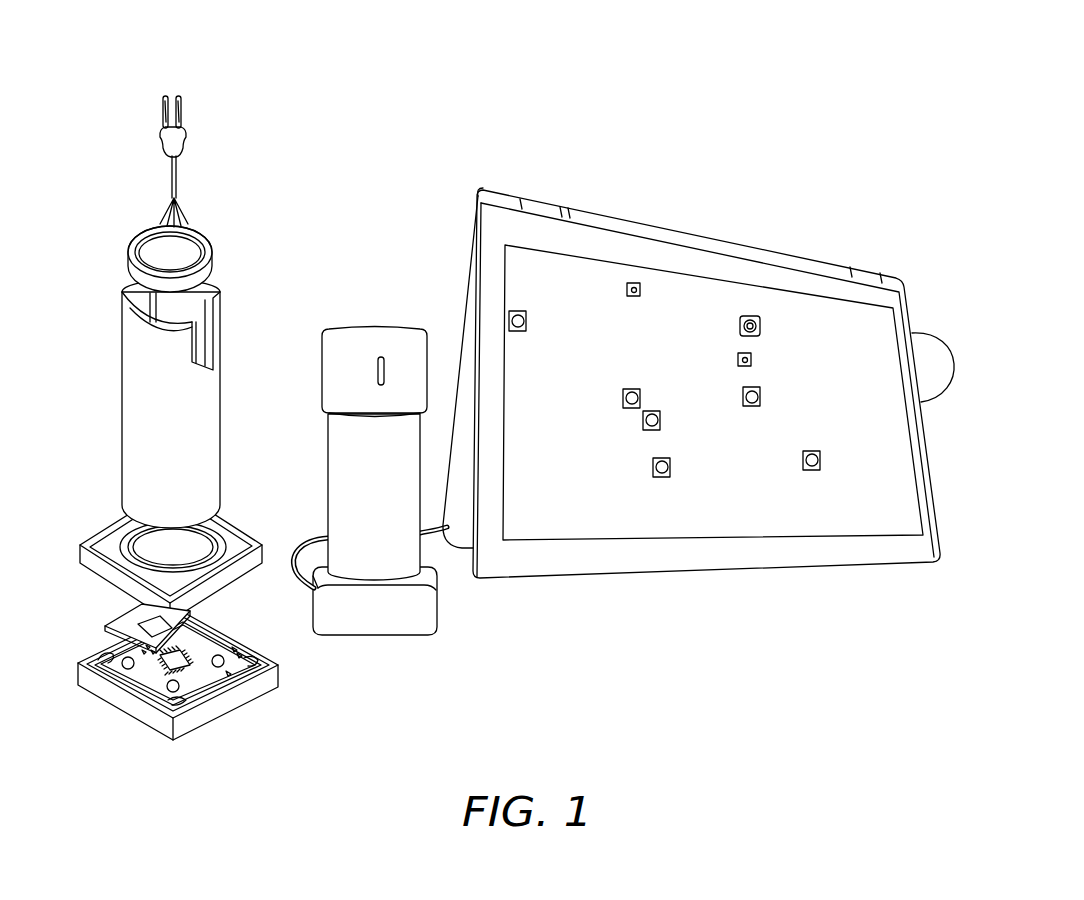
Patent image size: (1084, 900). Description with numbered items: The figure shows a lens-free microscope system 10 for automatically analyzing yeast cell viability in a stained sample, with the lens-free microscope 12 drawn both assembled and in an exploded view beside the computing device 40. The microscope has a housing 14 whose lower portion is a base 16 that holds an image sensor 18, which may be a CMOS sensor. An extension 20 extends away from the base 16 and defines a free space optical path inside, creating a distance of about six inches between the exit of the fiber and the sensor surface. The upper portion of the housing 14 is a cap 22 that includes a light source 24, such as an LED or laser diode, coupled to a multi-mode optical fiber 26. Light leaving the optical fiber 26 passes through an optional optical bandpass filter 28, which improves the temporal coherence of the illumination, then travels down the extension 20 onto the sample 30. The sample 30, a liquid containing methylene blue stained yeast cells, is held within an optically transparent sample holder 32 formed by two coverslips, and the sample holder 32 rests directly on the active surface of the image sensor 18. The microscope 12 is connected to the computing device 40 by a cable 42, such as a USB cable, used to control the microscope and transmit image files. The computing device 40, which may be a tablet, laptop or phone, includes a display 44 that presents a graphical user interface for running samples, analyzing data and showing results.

The lens-free microscope system 10 is at (530, 62).
The lens-free microscope 12 is at (345, 684).
The housing 14 is at (237, 422).
The base 16 is at (136, 708).
The image sensor 18 is at (162, 661).
The extension 20 is at (135, 452).
The cap 22 is at (356, 326).
The light source 24 is at (186, 127).
The multi-mode optical fiber 26 is at (178, 178).
The optical bandpass filter 28 is at (136, 245).
The sample 30 is at (152, 622).
The sample holder 32 is at (112, 627).
The computing device 40 is at (701, 373).
The cable 42 is at (933, 333).
The display 44 is at (585, 288).